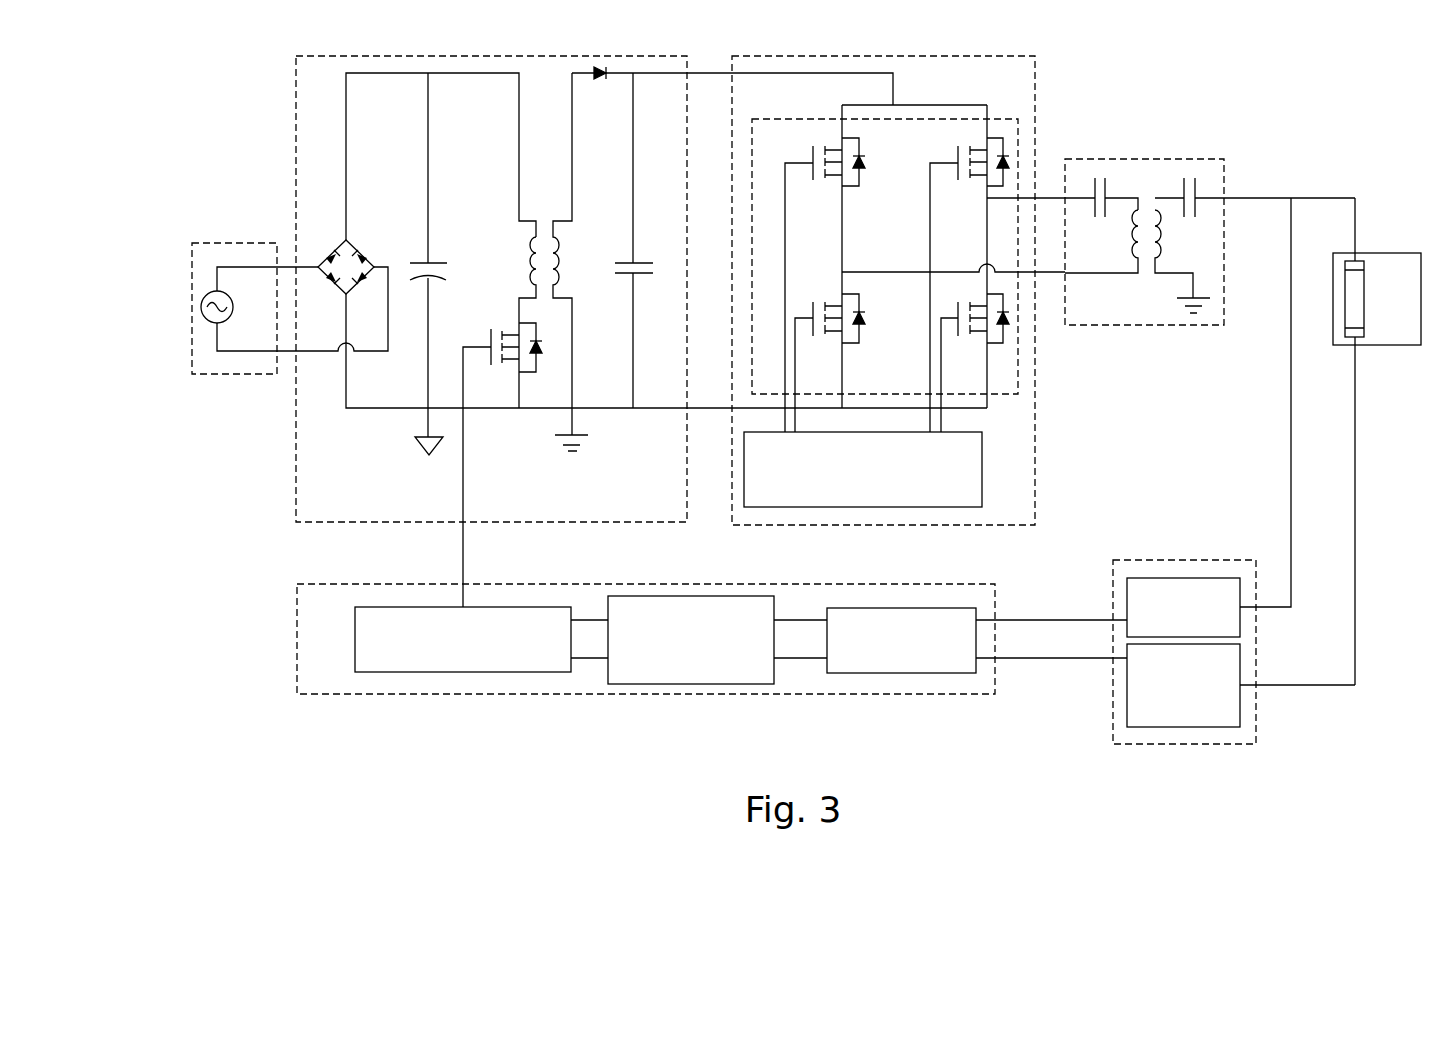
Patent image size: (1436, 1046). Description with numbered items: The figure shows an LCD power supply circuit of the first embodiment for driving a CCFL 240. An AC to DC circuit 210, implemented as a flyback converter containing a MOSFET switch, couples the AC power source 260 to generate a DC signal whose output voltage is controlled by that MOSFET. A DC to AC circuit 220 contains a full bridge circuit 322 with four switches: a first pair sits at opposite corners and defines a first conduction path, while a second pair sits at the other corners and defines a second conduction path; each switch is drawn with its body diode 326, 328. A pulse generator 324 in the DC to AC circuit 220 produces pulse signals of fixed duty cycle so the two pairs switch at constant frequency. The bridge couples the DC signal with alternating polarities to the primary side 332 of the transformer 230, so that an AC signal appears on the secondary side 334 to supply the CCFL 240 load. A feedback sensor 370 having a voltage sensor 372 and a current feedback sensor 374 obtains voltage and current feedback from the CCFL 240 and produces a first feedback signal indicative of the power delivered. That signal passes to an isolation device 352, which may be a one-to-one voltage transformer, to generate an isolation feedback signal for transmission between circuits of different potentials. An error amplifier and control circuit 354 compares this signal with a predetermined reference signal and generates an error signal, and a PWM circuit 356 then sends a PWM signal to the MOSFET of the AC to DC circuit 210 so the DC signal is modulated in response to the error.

The AC to DC circuit 210 is at (490, 56).
The DC to AC circuit 220 is at (864, 262).
The transformer 230 is at (1210, 212).
The CCFL 240 is at (1377, 253).
The AC power source 260 is at (233, 243).
The full bridge circuit 322 is at (919, 251).
The pulse generator 324 is at (983, 470).
The body diode 326 is at (862, 172).
The body diode 328 is at (991, 138).
The primary side 332 is at (1135, 232).
The secondary side 334 is at (1158, 232).
The isolation device 352 is at (903, 608).
The error amplifier and control circuit 354 is at (693, 596).
The PWM circuit 356 is at (518, 607).
The feedback sensor 370 is at (1193, 471).
The voltage sensor 372 is at (1127, 598).
The current feedback sensor 374 is at (1127, 684).